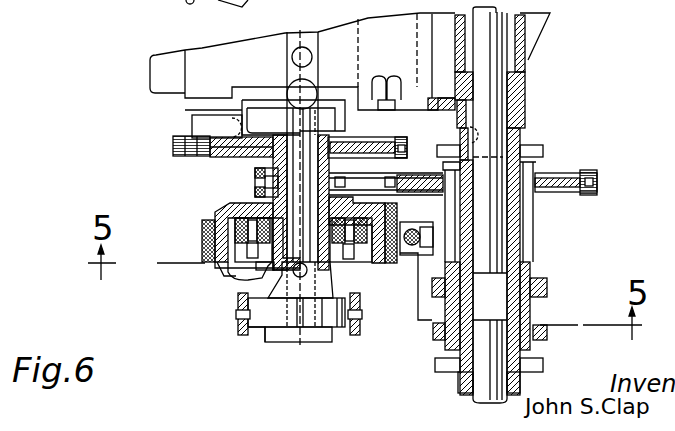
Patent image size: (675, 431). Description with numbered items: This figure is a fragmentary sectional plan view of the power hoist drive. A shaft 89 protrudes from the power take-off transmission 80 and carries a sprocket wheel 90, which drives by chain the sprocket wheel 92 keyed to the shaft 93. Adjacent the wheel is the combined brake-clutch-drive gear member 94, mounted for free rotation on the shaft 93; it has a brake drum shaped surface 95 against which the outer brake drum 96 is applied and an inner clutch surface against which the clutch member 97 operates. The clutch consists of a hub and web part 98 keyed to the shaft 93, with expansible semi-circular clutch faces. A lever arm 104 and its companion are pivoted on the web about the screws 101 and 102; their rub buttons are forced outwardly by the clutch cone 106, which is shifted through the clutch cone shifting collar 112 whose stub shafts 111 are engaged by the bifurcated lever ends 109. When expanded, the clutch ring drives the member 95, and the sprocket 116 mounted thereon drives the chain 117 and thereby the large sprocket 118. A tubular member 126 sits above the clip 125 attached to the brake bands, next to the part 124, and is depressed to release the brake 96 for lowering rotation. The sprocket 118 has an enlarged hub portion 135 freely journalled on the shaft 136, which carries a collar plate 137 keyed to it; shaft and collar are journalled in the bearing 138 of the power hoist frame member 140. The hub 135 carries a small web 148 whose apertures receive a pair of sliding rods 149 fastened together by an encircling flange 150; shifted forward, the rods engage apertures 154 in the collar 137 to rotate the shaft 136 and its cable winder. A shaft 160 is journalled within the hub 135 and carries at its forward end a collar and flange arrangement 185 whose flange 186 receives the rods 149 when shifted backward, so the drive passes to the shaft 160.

The power take-off transmission 80 is at (144, 67).
The shaft 89 is at (200, 110).
The sprocket wheel 90 is at (175, 146).
The sprocket wheel 92 is at (218, 157).
The shaft 93 is at (297, 158).
The sprocket 116 is at (258, 180).
The combined brake-clutch-drive gear member 94 is at (212, 212).
The outer brake drum 96 is at (203, 242).
The hub and web part 98 is at (327, 247).
The screw 101 is at (350, 257).
The screw 102 is at (245, 264).
The lever arm 104 is at (264, 270).
The brake drum shaped surface 95 is at (222, 262).
The clutch member 97 is at (225, 268).
The clutch cone 106 is at (281, 281).
The clutch cone shifting collar 112 is at (322, 318).
The hand knob 109 is at (246, 334).
The stub shafts 111 is at (238, 318).
The pinion shaft 124 is at (408, 231).
The tubular member 126 is at (418, 231).
The clip 125 is at (412, 257).
The power hoist frame member 140 is at (527, 37).
The bearing 138 is at (527, 86).
The collar plate 137 is at (520, 130).
The enlarged hub portion 135 is at (512, 225).
The shaft 136 is at (493, 205).
The shaft 160 is at (492, 386).
The apertures 154 is at (446, 148).
The chain 117 is at (573, 172).
The large sprocket 118 is at (598, 182).
The sliding rods 149 is at (442, 301).
The encircling flange 150 is at (546, 280).
The small web 148 is at (543, 325).
The flange 186 is at (437, 366).
The collar and flange arrangement 185 is at (457, 388).